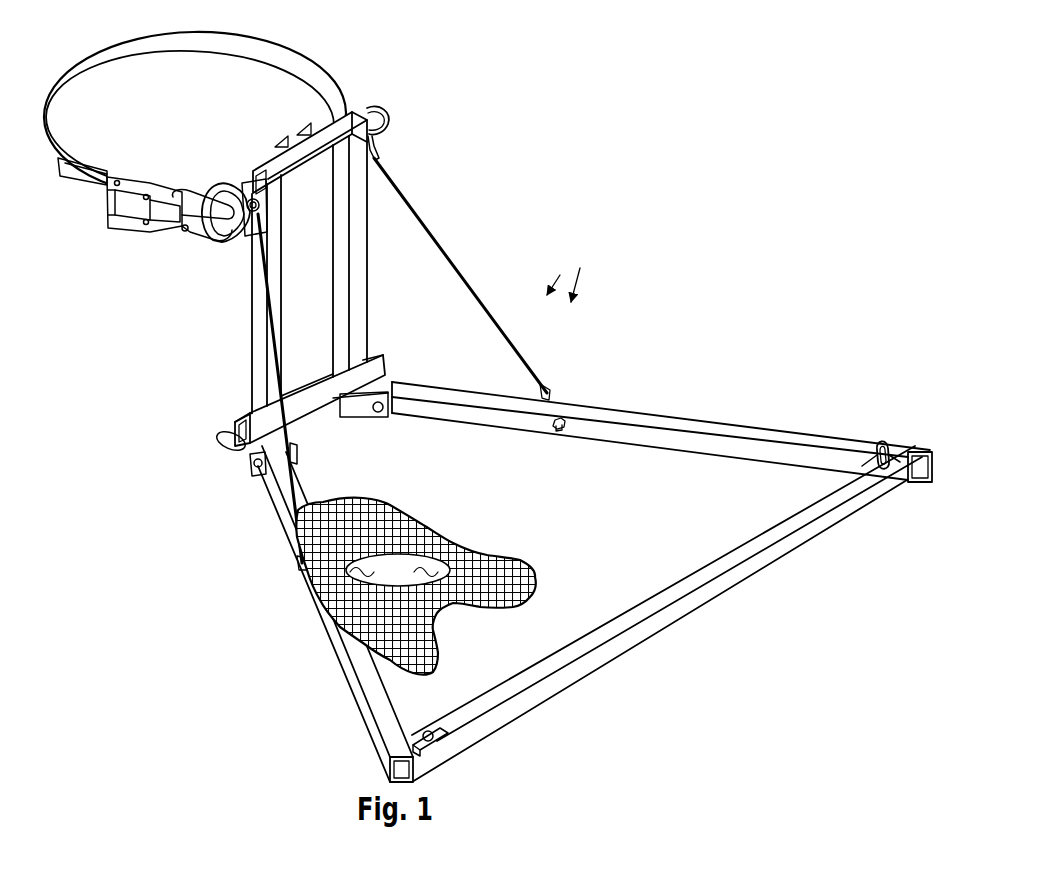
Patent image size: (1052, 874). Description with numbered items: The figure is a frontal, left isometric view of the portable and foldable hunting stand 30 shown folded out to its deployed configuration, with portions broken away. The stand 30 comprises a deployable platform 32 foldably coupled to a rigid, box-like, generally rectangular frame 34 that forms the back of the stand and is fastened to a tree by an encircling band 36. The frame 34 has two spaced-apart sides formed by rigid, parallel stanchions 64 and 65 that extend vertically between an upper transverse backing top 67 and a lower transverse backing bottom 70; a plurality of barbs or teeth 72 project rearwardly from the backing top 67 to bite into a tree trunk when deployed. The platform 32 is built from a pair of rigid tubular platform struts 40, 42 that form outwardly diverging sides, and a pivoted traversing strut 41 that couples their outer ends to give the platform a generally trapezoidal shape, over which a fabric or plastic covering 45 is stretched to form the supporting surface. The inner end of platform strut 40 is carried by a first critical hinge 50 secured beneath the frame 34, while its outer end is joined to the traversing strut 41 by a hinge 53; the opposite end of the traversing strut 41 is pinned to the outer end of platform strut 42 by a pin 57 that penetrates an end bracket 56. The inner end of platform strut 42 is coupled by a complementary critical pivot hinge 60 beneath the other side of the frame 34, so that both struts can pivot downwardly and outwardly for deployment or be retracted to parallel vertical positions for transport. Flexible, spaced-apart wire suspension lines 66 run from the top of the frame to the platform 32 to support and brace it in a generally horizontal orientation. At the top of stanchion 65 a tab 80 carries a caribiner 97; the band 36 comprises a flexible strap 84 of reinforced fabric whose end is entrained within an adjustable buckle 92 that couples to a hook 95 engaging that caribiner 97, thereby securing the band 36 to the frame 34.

The portable and foldable hunting stand 30 is at (584, 285).
The deployable platform 32 is at (652, 410).
The frame 34 is at (303, 242).
The encircling band 36 is at (297, 52).
The platform strut 40 is at (372, 688).
The traversing strut 41 is at (680, 598).
The platform strut 42 is at (638, 444).
The covering 45 is at (415, 586).
The first critical hinge 50 is at (250, 472).
The hinge 53 is at (425, 735).
The end bracket 56 is at (906, 482).
The pin 57 is at (884, 446).
The critical pivot hinge 60 is at (372, 418).
The stanchion 64 is at (285, 296).
The stanchion 65 is at (367, 266).
The suspension lines 66 is at (483, 303).
The backing top 67 is at (389, 128).
The backing bottom 70 is at (320, 398).
The barbs or teeth 72 is at (292, 122).
The tab 80 is at (250, 188).
The strap 84 is at (107, 67).
The adjustable buckle 92 is at (110, 220).
The hook 95 is at (125, 250).
The caribiner 97 is at (210, 186).